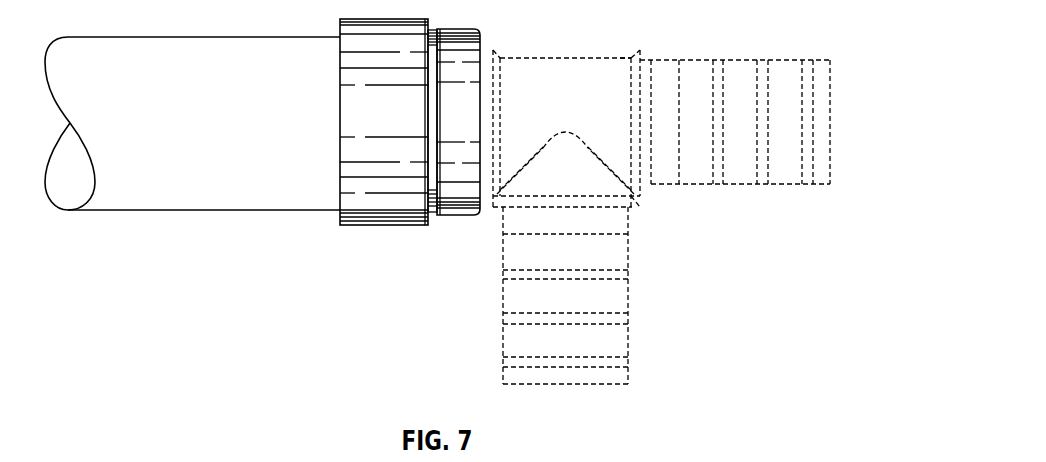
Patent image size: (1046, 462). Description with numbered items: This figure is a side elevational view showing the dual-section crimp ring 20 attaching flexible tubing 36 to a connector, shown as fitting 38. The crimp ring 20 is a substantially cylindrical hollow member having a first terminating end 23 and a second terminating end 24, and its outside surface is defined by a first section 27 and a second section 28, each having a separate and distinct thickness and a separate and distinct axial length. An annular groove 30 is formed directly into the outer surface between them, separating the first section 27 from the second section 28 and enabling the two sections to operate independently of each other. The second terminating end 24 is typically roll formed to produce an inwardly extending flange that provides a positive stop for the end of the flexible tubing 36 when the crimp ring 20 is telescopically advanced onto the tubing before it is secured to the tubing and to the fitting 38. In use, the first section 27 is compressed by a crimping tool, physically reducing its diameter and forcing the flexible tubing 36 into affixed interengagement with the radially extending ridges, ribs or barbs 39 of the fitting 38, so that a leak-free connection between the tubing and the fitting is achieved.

The crimp ring 20 is at (327, 104).
The first terminating end 23 is at (340, 28).
The second terminating end 24 is at (482, 45).
The first section 27 is at (367, 221).
The second section 28 is at (453, 218).
The annular groove 30 is at (433, 219).
The flexible tubing 36 is at (158, 192).
The fitting 38 is at (625, 217).
The radially extending ridges, ribs or barbs 39 is at (717, 67).